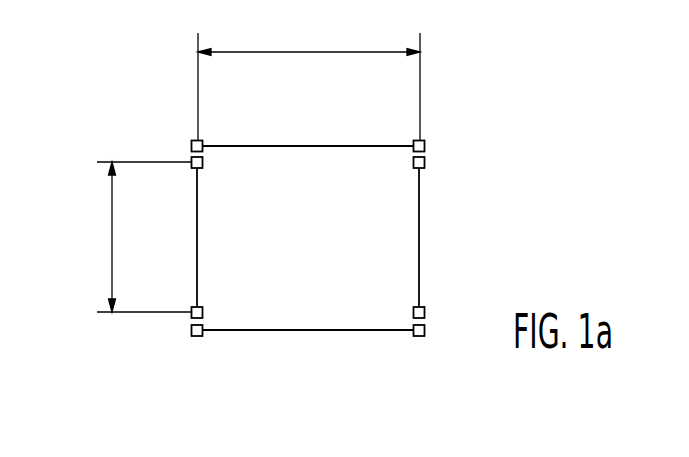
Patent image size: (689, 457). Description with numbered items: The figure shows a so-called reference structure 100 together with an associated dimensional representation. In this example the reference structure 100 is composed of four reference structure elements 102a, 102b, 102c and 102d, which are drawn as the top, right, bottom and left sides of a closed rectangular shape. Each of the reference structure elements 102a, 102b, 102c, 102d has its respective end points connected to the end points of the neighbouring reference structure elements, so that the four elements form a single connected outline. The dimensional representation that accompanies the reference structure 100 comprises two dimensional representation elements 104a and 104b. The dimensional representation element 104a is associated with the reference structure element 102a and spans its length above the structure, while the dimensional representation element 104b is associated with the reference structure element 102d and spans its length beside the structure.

The reference structure 100 is at (294, 278).
The reference structure element 102a is at (305, 147).
The reference structure element 102b is at (420, 238).
The reference structure element 102c is at (310, 331).
The reference structure element 102d is at (198, 225).
The dimensional representation element 104a is at (295, 51).
The dimensional representation element 104b is at (112, 230).